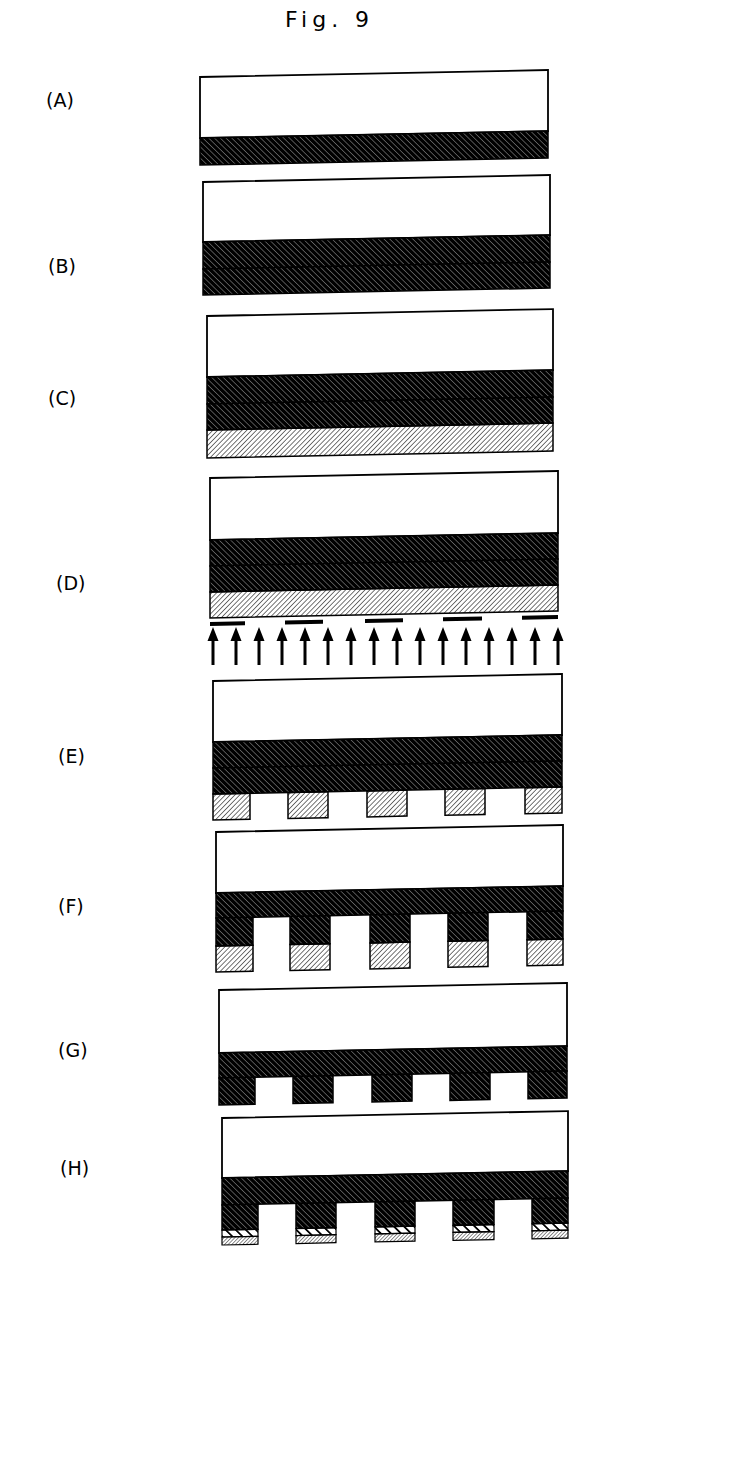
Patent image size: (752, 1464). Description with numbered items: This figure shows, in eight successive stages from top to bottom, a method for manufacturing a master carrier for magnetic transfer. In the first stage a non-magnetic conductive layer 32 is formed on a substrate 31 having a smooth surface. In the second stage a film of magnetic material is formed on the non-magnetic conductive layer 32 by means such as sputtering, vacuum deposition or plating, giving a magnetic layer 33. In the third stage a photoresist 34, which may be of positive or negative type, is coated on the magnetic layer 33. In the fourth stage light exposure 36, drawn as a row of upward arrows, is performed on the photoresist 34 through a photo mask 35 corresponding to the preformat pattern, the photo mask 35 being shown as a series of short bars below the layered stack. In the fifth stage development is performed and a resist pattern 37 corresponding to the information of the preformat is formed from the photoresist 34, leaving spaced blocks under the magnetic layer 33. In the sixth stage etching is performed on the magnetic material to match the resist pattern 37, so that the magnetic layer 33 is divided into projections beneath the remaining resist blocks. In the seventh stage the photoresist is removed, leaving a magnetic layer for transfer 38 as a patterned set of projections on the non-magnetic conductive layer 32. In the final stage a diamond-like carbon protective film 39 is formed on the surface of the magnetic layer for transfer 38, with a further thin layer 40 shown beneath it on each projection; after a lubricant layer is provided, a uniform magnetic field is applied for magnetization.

The substrate 31 is at (560, 93).
The non-magnetic conductive layer 32 is at (550, 139).
The magnetic layer 33 is at (551, 277).
The photoresist 34 is at (552, 438).
The photo mask 35 is at (562, 620).
The light exposure 36 is at (565, 646).
The resist pattern 37 is at (555, 803).
The magnetic layer for transfer 38 is at (567, 1091).
The diamond-like carbon protective film 39 is at (462, 1267).
The adhesive layer 40 is at (317, 1245).